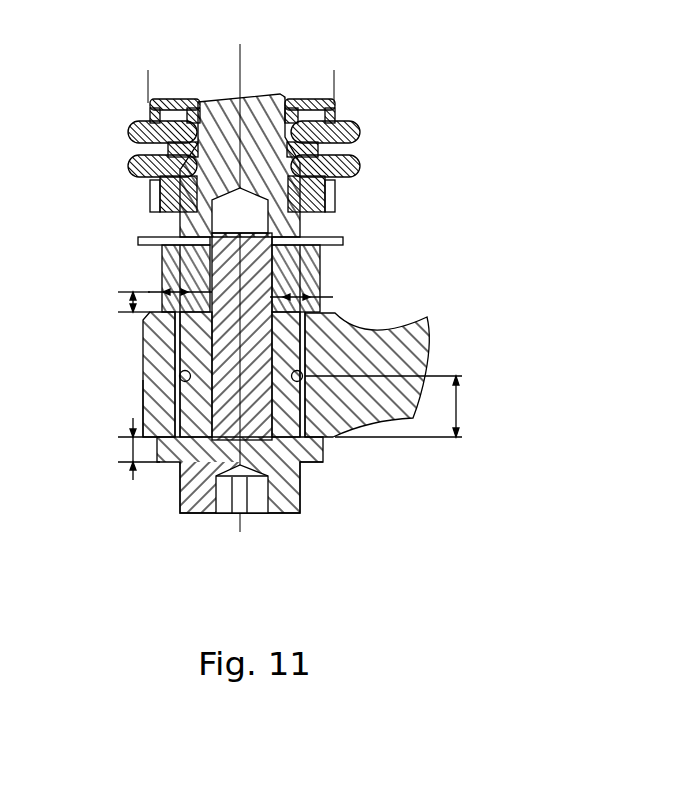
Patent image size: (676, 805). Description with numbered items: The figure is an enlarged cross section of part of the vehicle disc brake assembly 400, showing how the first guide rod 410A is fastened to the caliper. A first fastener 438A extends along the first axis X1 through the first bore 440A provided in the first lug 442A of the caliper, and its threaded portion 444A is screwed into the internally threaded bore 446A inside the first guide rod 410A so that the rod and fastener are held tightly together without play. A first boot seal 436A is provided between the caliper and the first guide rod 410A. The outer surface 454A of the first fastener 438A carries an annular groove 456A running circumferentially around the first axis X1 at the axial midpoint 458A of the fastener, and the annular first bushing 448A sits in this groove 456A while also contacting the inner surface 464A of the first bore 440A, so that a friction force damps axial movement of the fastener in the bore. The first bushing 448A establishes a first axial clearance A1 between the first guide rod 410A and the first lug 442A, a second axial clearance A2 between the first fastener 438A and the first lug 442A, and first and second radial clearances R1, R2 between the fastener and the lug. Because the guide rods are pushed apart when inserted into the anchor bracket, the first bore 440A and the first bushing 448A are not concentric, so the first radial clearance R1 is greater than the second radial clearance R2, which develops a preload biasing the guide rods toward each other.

The vehicle disc brake assembly 400 is at (118, 71).
The first axis X1 is at (239, 64).
The first guide rod 410A is at (273, 97).
The first boot seal 436A is at (345, 128).
The internally threaded bore 446A is at (180, 231).
The threaded portion 444A is at (303, 237).
The first radial clearance R1 is at (152, 290).
The second radial clearance R2 is at (327, 296).
The first axial clearance A1 is at (130, 296).
The second axial clearance A2 is at (130, 450).
The first bushing 448A is at (313, 367).
The first bore 440A is at (142, 353).
The first lug 442A is at (142, 400).
The outer surface 454A is at (172, 463).
The inner surface 464A is at (300, 463).
The first fastener 438A is at (182, 513).
The annular groove 456A is at (297, 513).
The axial midpoint 458A is at (458, 405).